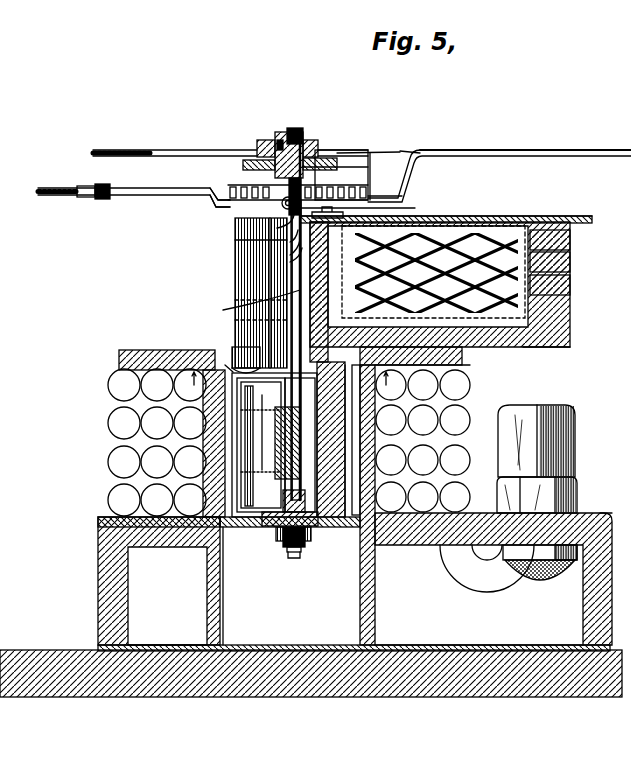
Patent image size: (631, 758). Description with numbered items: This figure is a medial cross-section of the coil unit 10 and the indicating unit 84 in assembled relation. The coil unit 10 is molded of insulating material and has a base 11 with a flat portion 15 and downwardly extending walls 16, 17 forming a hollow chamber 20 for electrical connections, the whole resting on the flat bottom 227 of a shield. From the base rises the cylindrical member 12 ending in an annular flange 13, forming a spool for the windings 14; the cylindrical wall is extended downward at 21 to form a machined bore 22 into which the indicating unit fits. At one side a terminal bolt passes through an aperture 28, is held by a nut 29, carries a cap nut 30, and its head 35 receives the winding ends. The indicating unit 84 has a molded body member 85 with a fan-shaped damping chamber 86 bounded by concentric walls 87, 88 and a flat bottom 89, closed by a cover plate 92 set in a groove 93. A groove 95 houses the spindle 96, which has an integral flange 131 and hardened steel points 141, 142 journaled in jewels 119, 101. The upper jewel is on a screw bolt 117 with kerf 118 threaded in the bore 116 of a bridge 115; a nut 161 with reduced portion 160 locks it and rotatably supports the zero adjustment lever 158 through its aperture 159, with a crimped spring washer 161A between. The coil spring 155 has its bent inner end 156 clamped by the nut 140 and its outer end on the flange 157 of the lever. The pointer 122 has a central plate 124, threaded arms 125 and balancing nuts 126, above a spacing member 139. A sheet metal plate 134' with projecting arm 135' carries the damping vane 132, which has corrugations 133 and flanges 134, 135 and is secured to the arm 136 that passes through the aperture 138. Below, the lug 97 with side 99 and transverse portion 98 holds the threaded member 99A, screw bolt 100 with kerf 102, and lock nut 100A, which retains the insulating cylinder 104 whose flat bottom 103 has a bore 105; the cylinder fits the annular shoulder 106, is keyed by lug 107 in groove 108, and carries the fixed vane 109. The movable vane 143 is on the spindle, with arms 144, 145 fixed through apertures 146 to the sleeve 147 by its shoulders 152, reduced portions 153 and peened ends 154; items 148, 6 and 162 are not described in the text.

The hollow chamber 20 is at (483, 625).
The flat bottom of shield 227 is at (172, 637).
The downwardly extending wall 17 is at (98, 591).
The flat portion 15 is at (100, 515).
The fixed vane 109 is at (203, 442).
The coil unit 10 is at (120, 385).
The movable vane 143 is at (205, 480).
The coil winding 148 is at (123, 508).
The arrow indicator 6 is at (288, 388).
The threaded member 99A is at (278, 535).
The transverse portion 98 is at (265, 526).
The threaded screw bolt 100 is at (280, 552).
The kerf 102 is at (283, 550).
The flat bottom of insulating cylinder 103 is at (272, 537).
The lock nut 100A is at (286, 560).
The jewel 101 is at (292, 563).
The bore 105 is at (312, 530).
The downwardly projecting lug 97 is at (306, 530).
The bore 22 is at (372, 570).
The hardened steel point 142 is at (375, 600).
The downward extension of cylindrical wall 21 is at (375, 617).
The reduced cylindrical portion 153 is at (300, 410).
The arm 144 is at (266, 408).
The annular shoulder 152 is at (253, 446).
The aperture 146 is at (272, 432).
The sleeve 147 is at (263, 452).
The arm 145 is at (281, 443).
The peened end 154 is at (302, 495).
The spindle 96 is at (267, 287).
The groove 95 is at (283, 325).
The body member 85 is at (253, 307).
The short curved wall 88 is at (277, 320).
The side of lug 99 is at (230, 360).
The annular shoulder 106 is at (225, 365).
The central plate 124 is at (290, 222).
The integral flange 131 is at (277, 228).
The spacing member 139 is at (290, 242).
The plate of sheet metal 134' is at (225, 260).
The projecting arm 135' is at (213, 274).
The aperture 138 is at (223, 310).
The kerf 118 is at (292, 130).
The nut 161 is at (278, 142).
The reduced cylindrical portion 160 is at (258, 150).
The threaded bore 116 is at (243, 164).
The screw bolt 117 is at (310, 142).
The jewel 119 is at (312, 172).
The zero adjustment lever 158 is at (150, 138).
The pivot pin 162 is at (182, 150).
The nut 140 is at (262, 190).
The coil spring 155 is at (212, 192).
The downwardly bent inner end 156 is at (289, 200).
The arm 136 is at (345, 212).
The hardened steel point 141 is at (370, 168).
The downwardly turned flange 157 is at (378, 186).
The aperture 159 is at (320, 156).
The bridge 115 is at (428, 152).
The crimped spring washer 161A is at (395, 148).
The pointer 122 is at (475, 151).
The threaded arm 125 is at (150, 196).
The nut 126 is at (103, 198).
The indicating unit 84 is at (560, 305).
The groove 93 is at (575, 219).
The flange 135 is at (385, 204).
The cover plate 92 is at (474, 217).
The damping vane 132 is at (473, 237).
The transverse corrugations 133 is at (506, 237).
The damping chamber 86 is at (560, 238).
The circular wall 87 is at (548, 262).
The flange 134 is at (575, 285).
The flat bottom 89 is at (530, 346).
The annular flange 13 is at (462, 356).
The lug 107 is at (478, 372).
The groove 108 is at (457, 383).
The cylindrical member 12 is at (400, 427).
The insulating cylinder 104 is at (377, 457).
The cap nut 30 is at (575, 427).
The nut 29 is at (575, 487).
The aperture 28 is at (585, 495).
The downwardly extending wall 16 is at (583, 626).
The base 11 is at (604, 513).
The windings 14 is at (482, 621).
The bolt head 35 is at (549, 577).